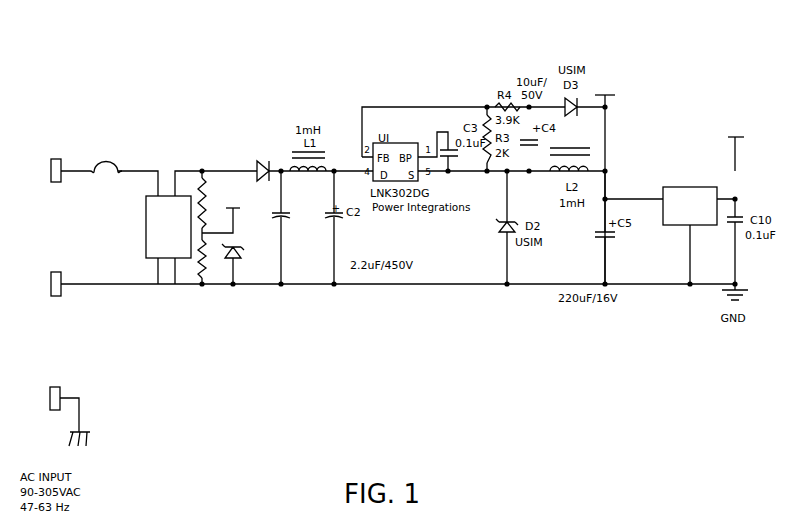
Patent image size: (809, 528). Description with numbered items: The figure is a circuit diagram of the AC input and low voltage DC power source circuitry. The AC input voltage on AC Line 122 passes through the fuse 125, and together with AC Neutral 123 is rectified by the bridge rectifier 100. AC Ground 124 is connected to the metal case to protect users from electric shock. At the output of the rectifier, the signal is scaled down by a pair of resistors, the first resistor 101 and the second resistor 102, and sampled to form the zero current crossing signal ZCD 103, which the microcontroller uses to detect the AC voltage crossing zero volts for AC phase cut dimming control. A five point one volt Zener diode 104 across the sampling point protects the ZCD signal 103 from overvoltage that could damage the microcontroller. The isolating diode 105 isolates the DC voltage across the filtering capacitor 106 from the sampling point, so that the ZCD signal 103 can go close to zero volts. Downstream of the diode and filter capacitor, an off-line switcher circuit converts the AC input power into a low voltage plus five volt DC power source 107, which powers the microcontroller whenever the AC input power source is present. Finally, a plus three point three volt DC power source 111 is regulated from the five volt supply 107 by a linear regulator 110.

The bridge rectifier BR1 100 is at (157, 140).
The resistor R1 101 is at (200, 178).
The resistor R2 102 is at (199, 256).
The zero current crossing ZCD signal 103 is at (230, 177).
The 5.1V Zener diode Z1 104 is at (242, 272).
The diode D1 105 is at (265, 115).
The filtering capacitor C1 106 is at (293, 222).
The +5 VDC power source 107 is at (610, 74).
The linear regulator VR2 110 is at (683, 133).
The +3.3 VDC power source 111 is at (739, 115).
The AC Line 122 is at (53, 135).
The AC Neutral 123 is at (63, 254).
The AC Ground 124 is at (64, 363).
The fuse Fuse1 125 is at (103, 135).